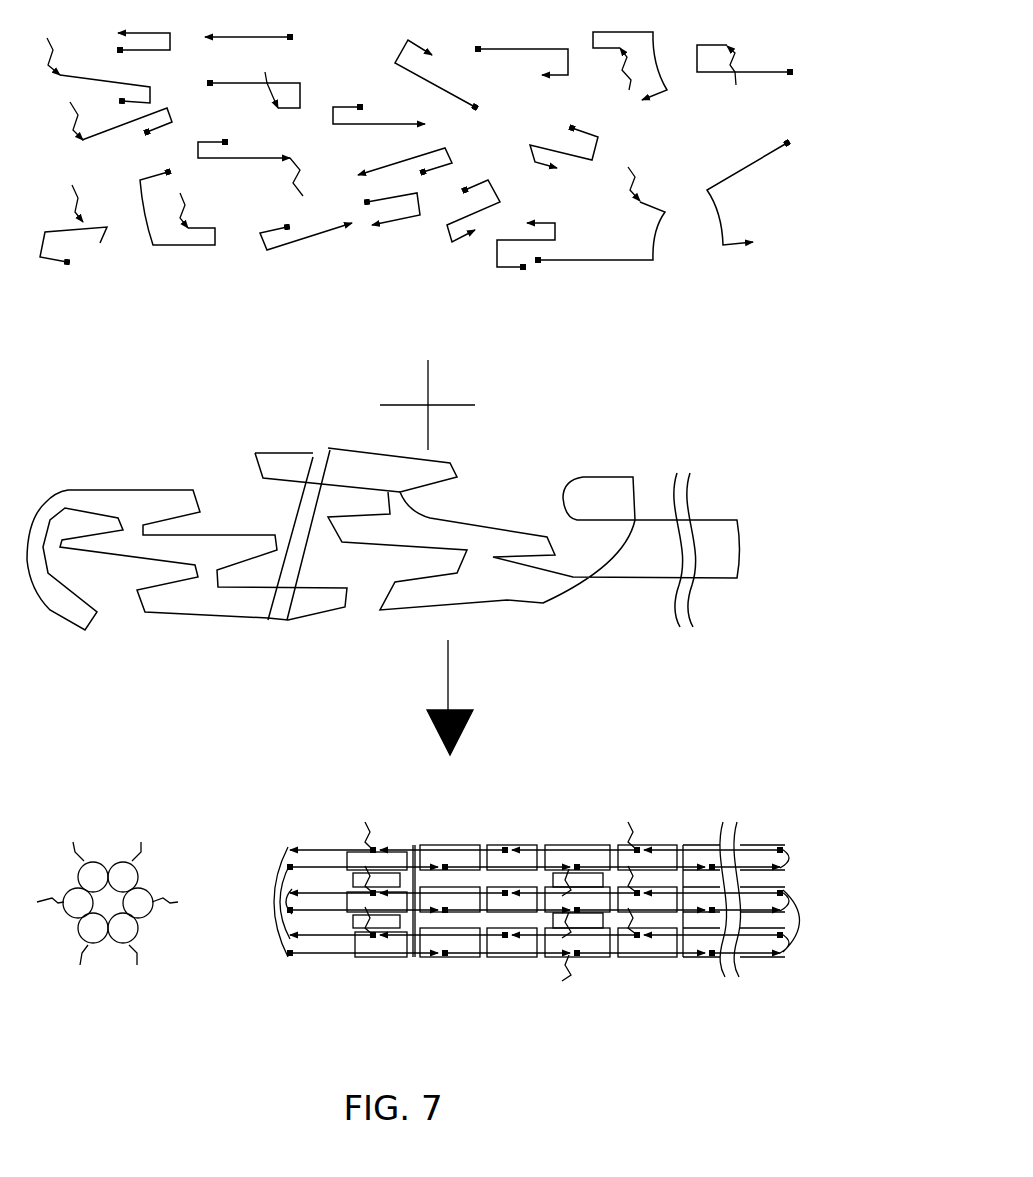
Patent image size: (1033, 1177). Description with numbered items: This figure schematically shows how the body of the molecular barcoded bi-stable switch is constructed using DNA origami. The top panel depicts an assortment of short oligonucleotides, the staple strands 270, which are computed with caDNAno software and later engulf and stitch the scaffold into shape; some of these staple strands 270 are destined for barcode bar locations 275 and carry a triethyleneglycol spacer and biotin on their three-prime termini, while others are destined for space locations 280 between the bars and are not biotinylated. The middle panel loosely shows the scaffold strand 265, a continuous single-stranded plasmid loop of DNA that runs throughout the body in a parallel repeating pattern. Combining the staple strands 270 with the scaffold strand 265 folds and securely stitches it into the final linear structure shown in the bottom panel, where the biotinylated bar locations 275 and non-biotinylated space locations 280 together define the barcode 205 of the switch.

The barcode 205 is at (328, 1022).
The scaffold strand 265 is at (270, 453).
The staple strands 270 is at (73, 317).
The bar locations 275 is at (103, 243).
The space locations 280 is at (302, 247).